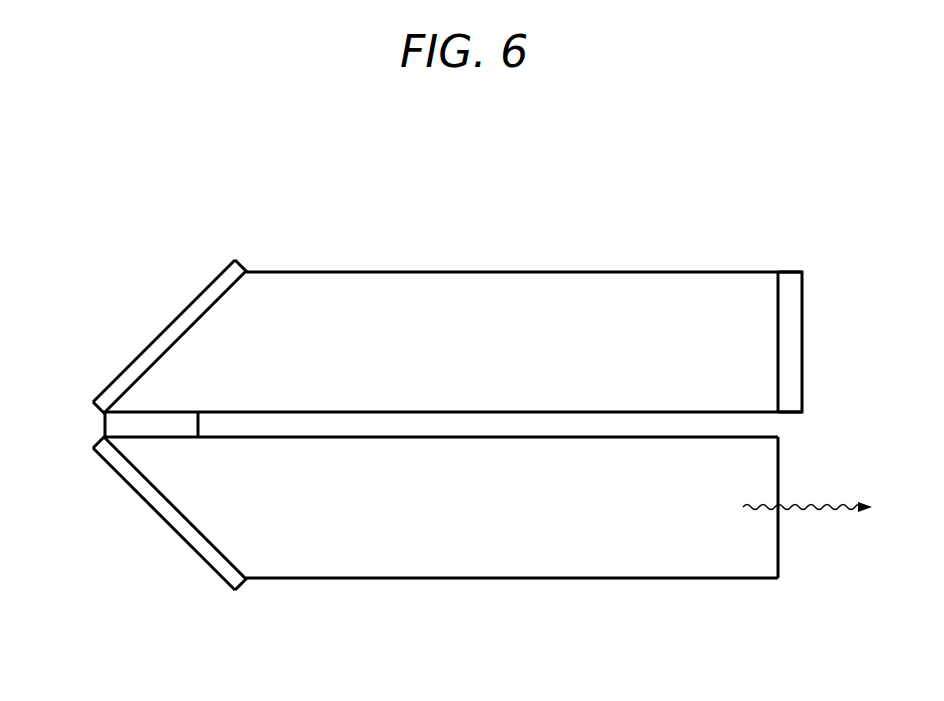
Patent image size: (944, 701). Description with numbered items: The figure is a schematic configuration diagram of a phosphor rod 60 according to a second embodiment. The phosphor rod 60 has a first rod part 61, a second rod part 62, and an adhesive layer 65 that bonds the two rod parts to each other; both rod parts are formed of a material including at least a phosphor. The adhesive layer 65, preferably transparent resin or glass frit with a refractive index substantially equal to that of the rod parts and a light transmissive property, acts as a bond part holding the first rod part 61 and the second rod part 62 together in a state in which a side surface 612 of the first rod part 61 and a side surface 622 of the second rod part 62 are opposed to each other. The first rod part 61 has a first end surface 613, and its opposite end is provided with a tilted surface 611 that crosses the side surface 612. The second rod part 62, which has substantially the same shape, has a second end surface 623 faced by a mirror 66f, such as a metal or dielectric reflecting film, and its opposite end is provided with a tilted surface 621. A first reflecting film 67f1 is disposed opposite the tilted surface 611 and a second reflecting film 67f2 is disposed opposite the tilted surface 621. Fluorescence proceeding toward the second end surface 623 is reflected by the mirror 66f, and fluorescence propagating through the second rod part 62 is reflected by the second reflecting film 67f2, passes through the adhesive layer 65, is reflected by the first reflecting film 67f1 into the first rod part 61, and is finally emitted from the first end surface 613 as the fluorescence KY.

The phosphor rod 60 is at (802, 154).
The first rod part 61 is at (321, 570).
The second rod part 62 is at (321, 285).
The tilted surface 611 is at (197, 532).
The side surface 612 is at (430, 427).
The first end surface 613 is at (778, 548).
The tilted surface 621 is at (197, 318).
The side surface 622 is at (646, 420).
The second end surface 623 is at (778, 283).
The adhesive layer 65 is at (118, 423).
The mirror 66f is at (797, 316).
The first reflecting film 67f1 is at (158, 503).
The second reflecting film 67f2 is at (158, 347).
The fluorescence KY is at (832, 500).